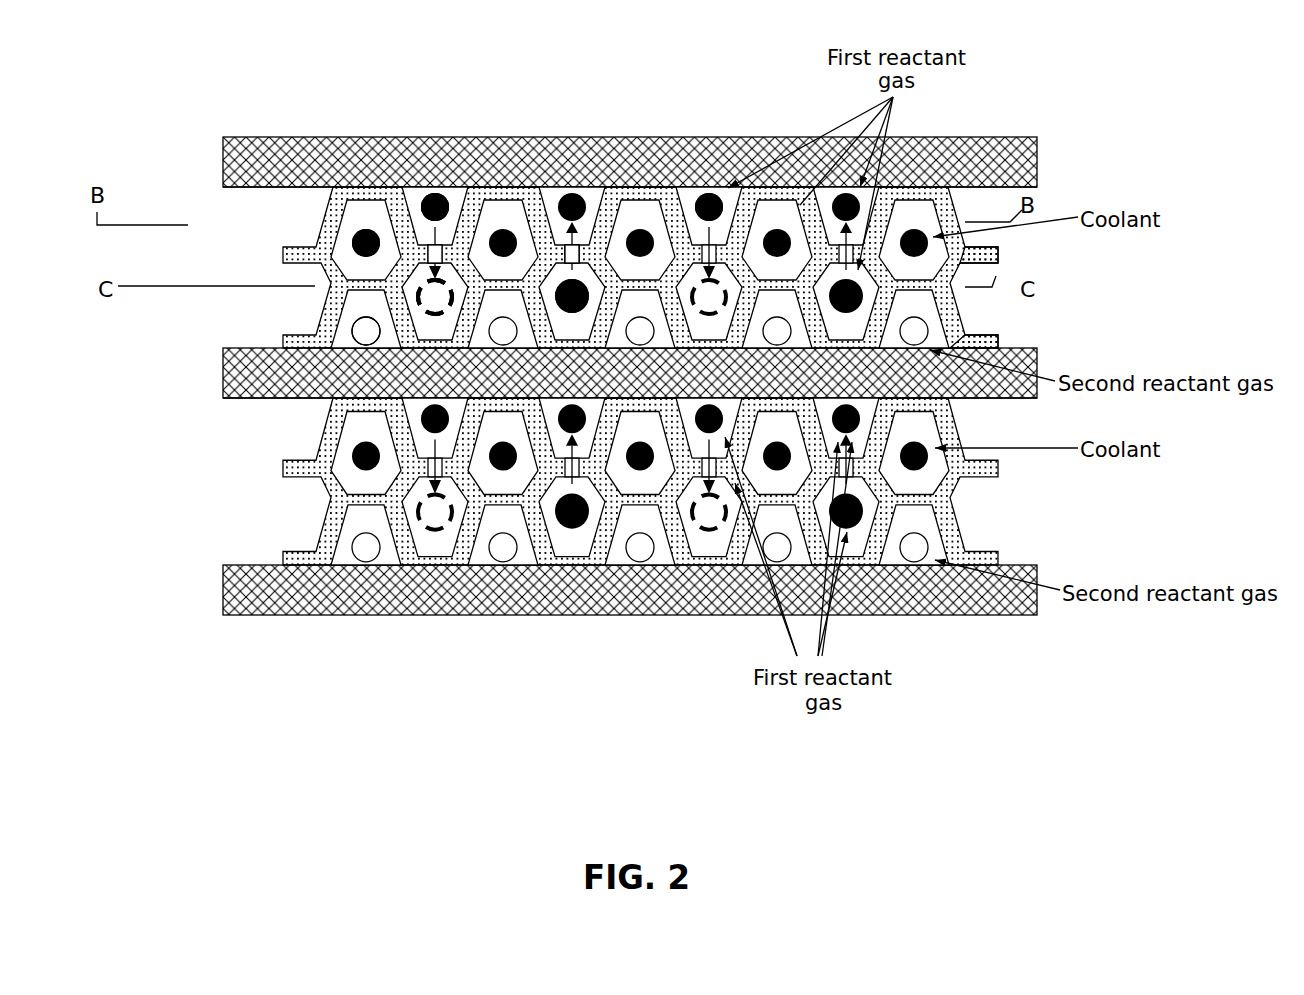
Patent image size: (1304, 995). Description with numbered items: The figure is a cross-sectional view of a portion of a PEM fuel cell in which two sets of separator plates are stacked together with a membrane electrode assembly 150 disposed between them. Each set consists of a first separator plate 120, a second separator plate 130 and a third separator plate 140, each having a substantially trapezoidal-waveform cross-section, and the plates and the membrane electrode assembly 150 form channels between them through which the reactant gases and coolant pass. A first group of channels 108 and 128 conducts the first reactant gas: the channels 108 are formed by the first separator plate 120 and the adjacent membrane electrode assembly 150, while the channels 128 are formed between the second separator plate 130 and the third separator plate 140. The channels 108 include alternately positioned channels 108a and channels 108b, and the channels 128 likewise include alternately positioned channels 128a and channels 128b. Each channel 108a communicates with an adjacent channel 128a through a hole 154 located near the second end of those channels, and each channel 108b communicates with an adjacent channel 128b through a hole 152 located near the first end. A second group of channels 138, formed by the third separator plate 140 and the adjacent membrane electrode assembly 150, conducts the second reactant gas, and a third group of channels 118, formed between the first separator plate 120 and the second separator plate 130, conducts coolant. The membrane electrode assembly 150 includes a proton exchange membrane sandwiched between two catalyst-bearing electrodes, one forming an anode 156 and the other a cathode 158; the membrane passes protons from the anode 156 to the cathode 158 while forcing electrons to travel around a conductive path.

The channels 108 is at (412, 210).
The channels 108a is at (410, 205).
The channels 108b is at (567, 245).
The channels 118 is at (352, 247).
The first separator plate 120 is at (958, 188).
The channels 128 is at (420, 291).
The channels 128a is at (418, 284).
The channels 128b is at (562, 275).
The second separator plate 130 is at (957, 271).
The channels 138 is at (352, 333).
The third separator plate 140 is at (965, 318).
The membrane electrode assembly 150 is at (1033, 143).
The hole 152 is at (428, 256).
The hole 154 is at (578, 250).
The anode 156 is at (224, 348).
The cathode 158 is at (224, 187).